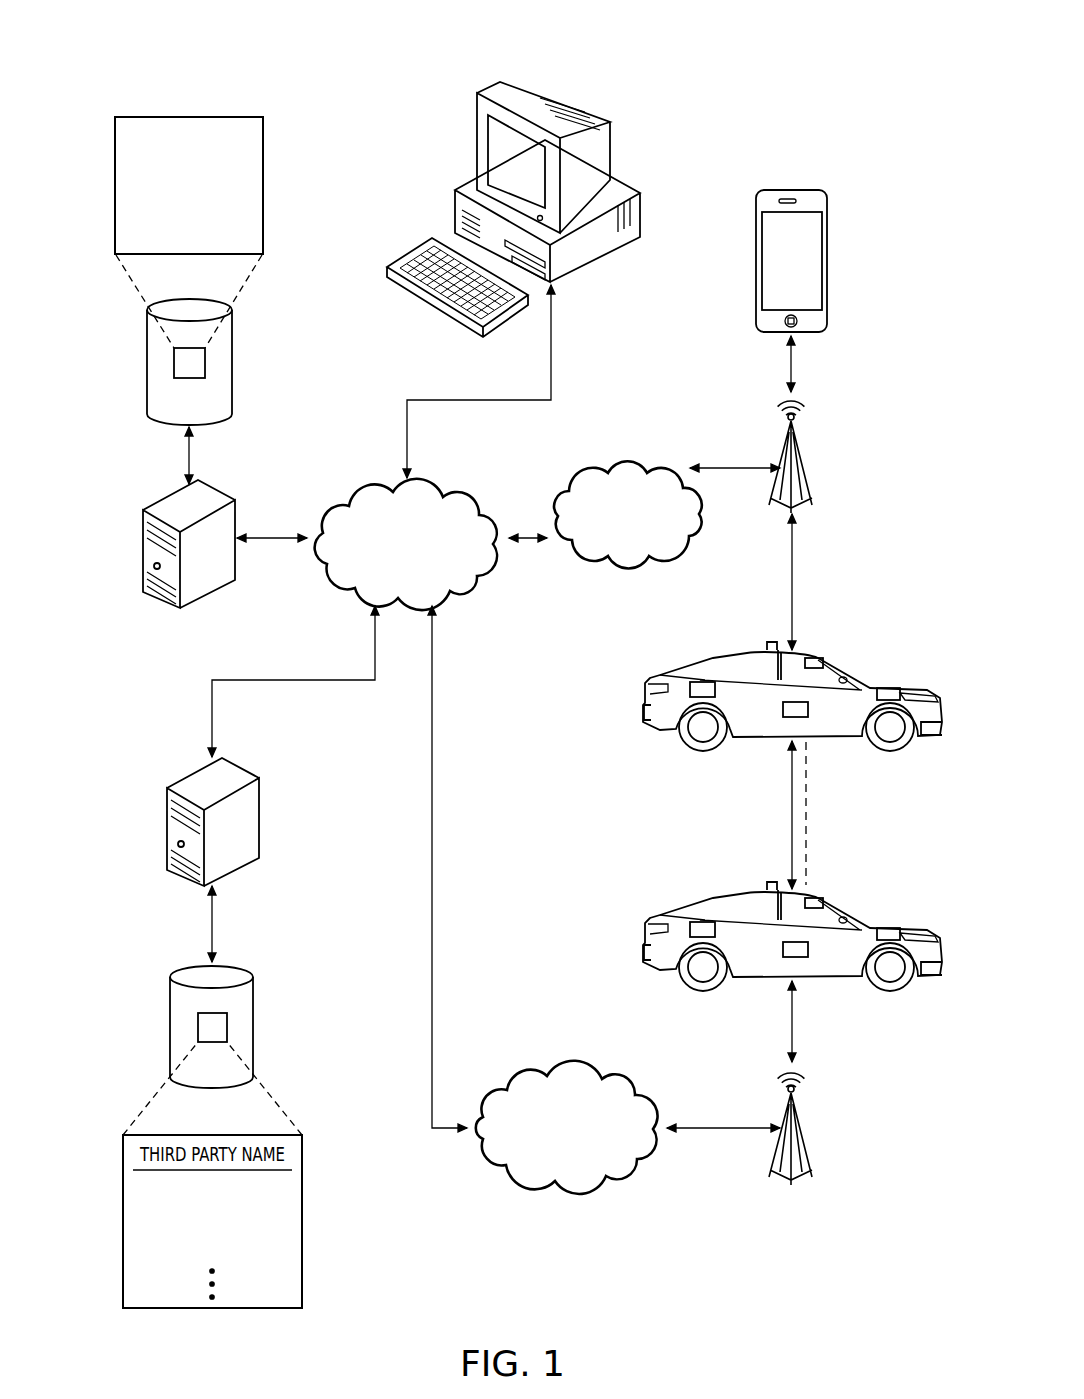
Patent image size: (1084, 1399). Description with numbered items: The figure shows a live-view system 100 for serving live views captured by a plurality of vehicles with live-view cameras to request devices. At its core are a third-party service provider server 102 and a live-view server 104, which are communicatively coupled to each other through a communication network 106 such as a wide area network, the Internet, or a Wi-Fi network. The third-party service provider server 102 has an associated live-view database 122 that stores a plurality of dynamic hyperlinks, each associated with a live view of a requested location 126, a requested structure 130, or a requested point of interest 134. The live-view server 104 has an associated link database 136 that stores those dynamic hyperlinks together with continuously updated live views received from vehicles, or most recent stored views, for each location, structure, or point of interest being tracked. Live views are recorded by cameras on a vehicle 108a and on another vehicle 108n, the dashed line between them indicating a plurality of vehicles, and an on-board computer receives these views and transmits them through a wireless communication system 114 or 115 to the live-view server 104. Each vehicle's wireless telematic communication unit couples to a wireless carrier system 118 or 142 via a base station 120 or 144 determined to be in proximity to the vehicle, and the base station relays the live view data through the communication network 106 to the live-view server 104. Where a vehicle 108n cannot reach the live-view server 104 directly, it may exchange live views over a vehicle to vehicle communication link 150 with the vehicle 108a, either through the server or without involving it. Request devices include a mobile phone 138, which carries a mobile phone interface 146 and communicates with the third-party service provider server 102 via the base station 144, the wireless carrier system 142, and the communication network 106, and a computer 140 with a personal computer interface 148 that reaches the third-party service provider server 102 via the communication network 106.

The live-view system 100 is at (792, 90).
The third-party service provider server 102 is at (236, 515).
The live-view server 104 is at (260, 817).
The communication network 106 is at (468, 481).
The vehicle 108a is at (733, 657).
The vehicle 108n is at (758, 924).
The wireless communication system 114 is at (778, 1218).
The wireless communication system 115 is at (705, 390).
The wireless carrier system 118 is at (572, 1193).
The base station 120 is at (805, 1138).
The live-view database 122 is at (233, 360).
The requested location 126 is at (124, 156).
The requested structure 130 is at (124, 186).
The requested point of interest 134 is at (124, 218).
The link database 136 is at (257, 1030).
The mobile phone 138 is at (793, 190).
The computer 140 is at (597, 112).
The wireless carrier system 142 is at (618, 460).
The base station 144 is at (806, 468).
The mobile phone interface 146 is at (812, 255).
The personal computer interface 148 is at (502, 152).
The vehicle to vehicle communication link 150 is at (790, 818).